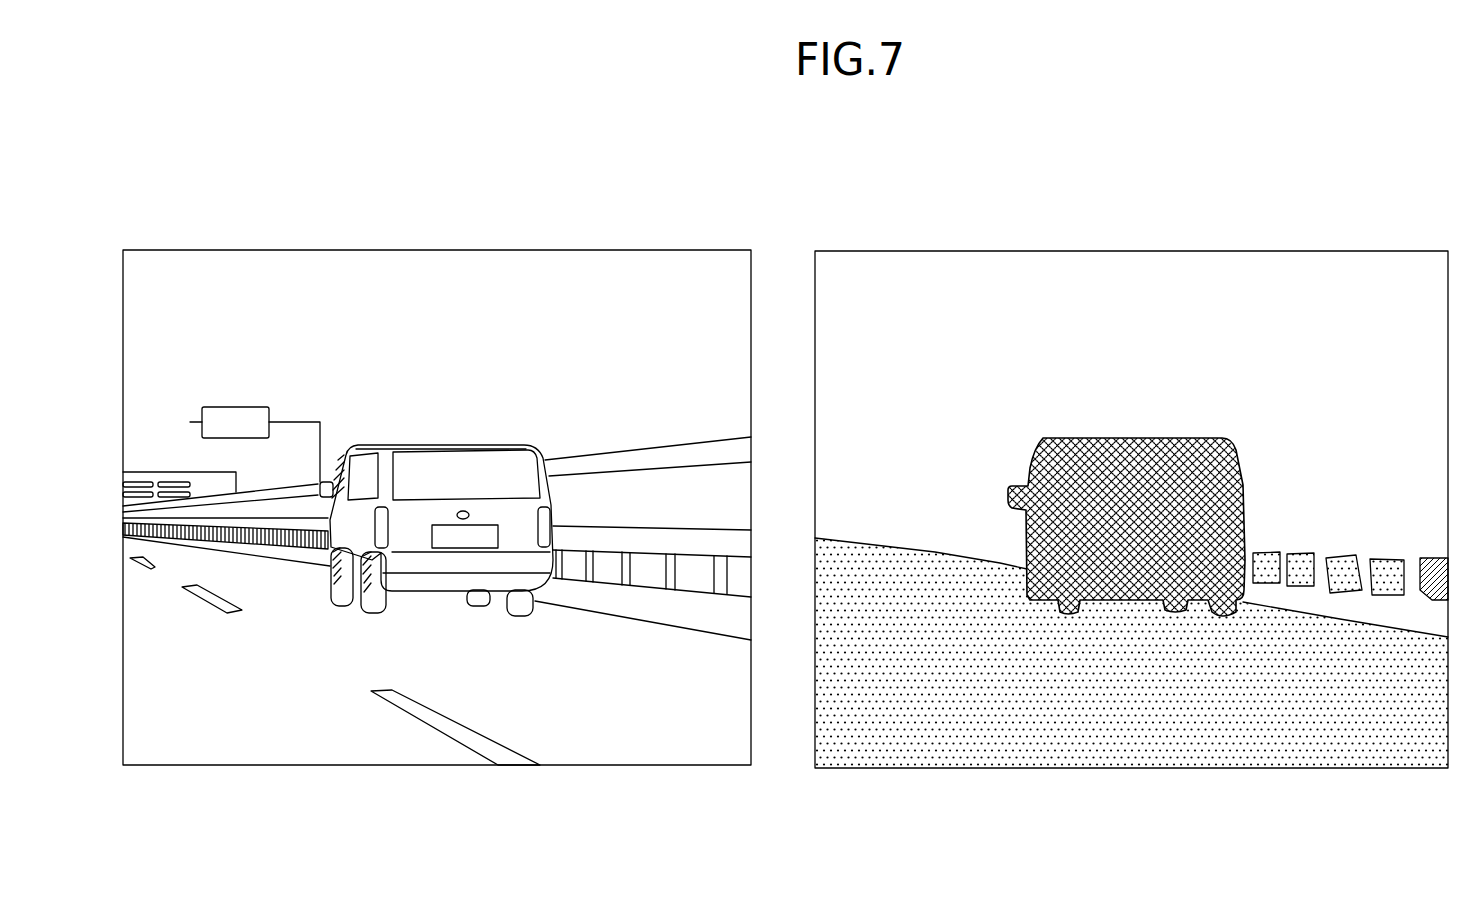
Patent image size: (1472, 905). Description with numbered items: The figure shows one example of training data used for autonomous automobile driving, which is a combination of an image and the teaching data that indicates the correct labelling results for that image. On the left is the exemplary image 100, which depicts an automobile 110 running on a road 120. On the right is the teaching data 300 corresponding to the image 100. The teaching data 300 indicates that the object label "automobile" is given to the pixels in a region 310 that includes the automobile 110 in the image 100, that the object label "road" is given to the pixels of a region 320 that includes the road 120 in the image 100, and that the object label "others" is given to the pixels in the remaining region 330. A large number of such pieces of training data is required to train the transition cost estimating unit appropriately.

The image 100 is at (678, 250).
The automobile 110 is at (500, 440).
The road 120 is at (180, 733).
The teaching data 300 is at (1360, 250).
The region 310 is at (1075, 438).
The region 320 is at (866, 556).
The remaining region 330 is at (1270, 367).